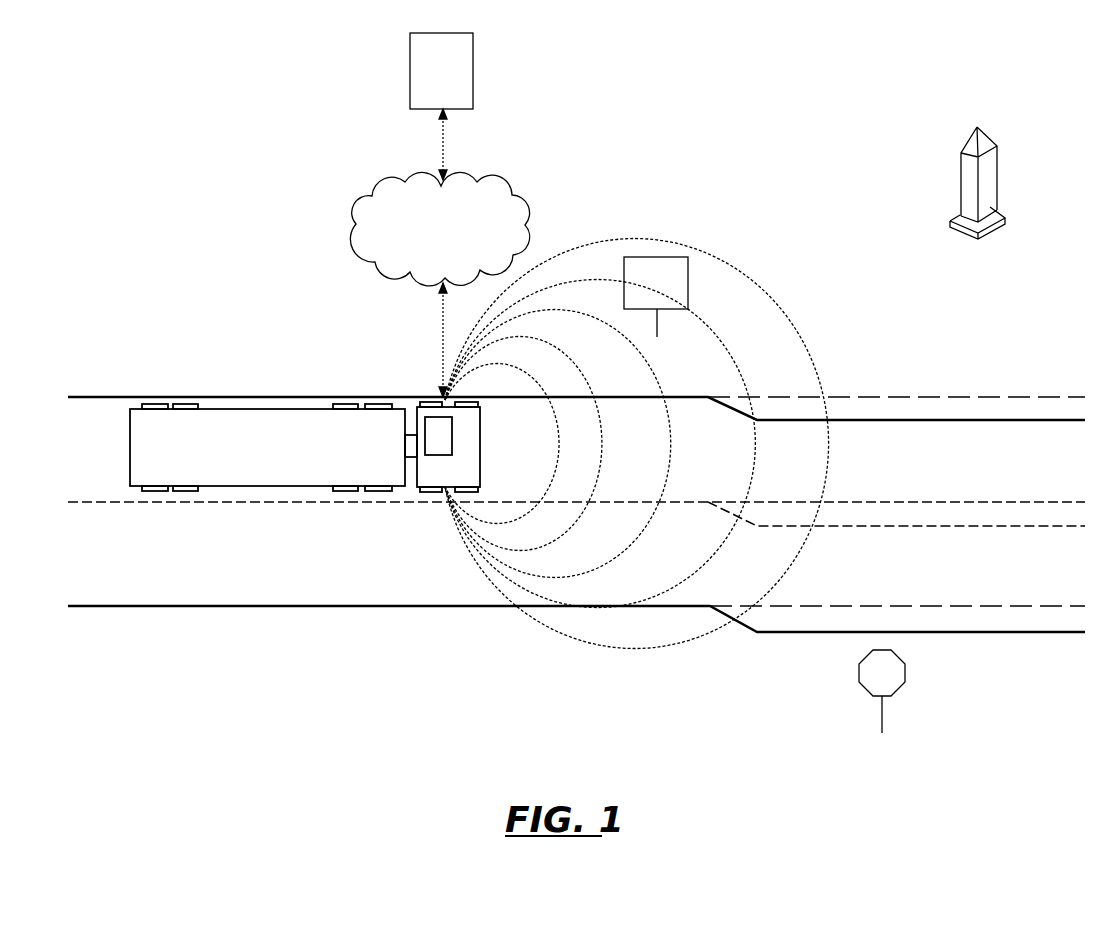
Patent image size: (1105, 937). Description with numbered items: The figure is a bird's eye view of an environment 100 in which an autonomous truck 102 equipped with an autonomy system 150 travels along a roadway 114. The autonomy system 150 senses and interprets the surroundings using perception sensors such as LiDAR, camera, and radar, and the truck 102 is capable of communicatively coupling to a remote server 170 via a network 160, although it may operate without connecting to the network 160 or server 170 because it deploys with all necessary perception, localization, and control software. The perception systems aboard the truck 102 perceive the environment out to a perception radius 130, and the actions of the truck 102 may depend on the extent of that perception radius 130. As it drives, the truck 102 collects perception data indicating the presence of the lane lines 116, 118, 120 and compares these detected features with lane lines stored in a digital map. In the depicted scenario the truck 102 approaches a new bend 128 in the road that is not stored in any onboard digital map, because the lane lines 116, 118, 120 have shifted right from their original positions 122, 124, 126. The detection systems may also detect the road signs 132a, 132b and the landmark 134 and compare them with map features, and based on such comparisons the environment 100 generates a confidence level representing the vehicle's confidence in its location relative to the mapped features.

The environment 100 is at (147, 246).
The autonomous truck 102 is at (305, 450).
The roadway 114 is at (870, 268).
The lane line 116 is at (1022, 419).
The lane line 118 is at (1025, 525).
The lane line 120 is at (1025, 631).
The original position of lane line 122 is at (950, 396).
The original position of lane line 124 is at (957, 500).
The original position of lane line 126 is at (957, 605).
The bend in the road 128 is at (768, 352).
The perception radius 130 is at (524, 620).
The road sign 132a is at (688, 282).
The road sign 132b is at (905, 675).
The landmark 134 is at (997, 177).
The autonomy system 150 is at (432, 403).
The network 160 is at (428, 240).
The remote server 170 is at (428, 78).